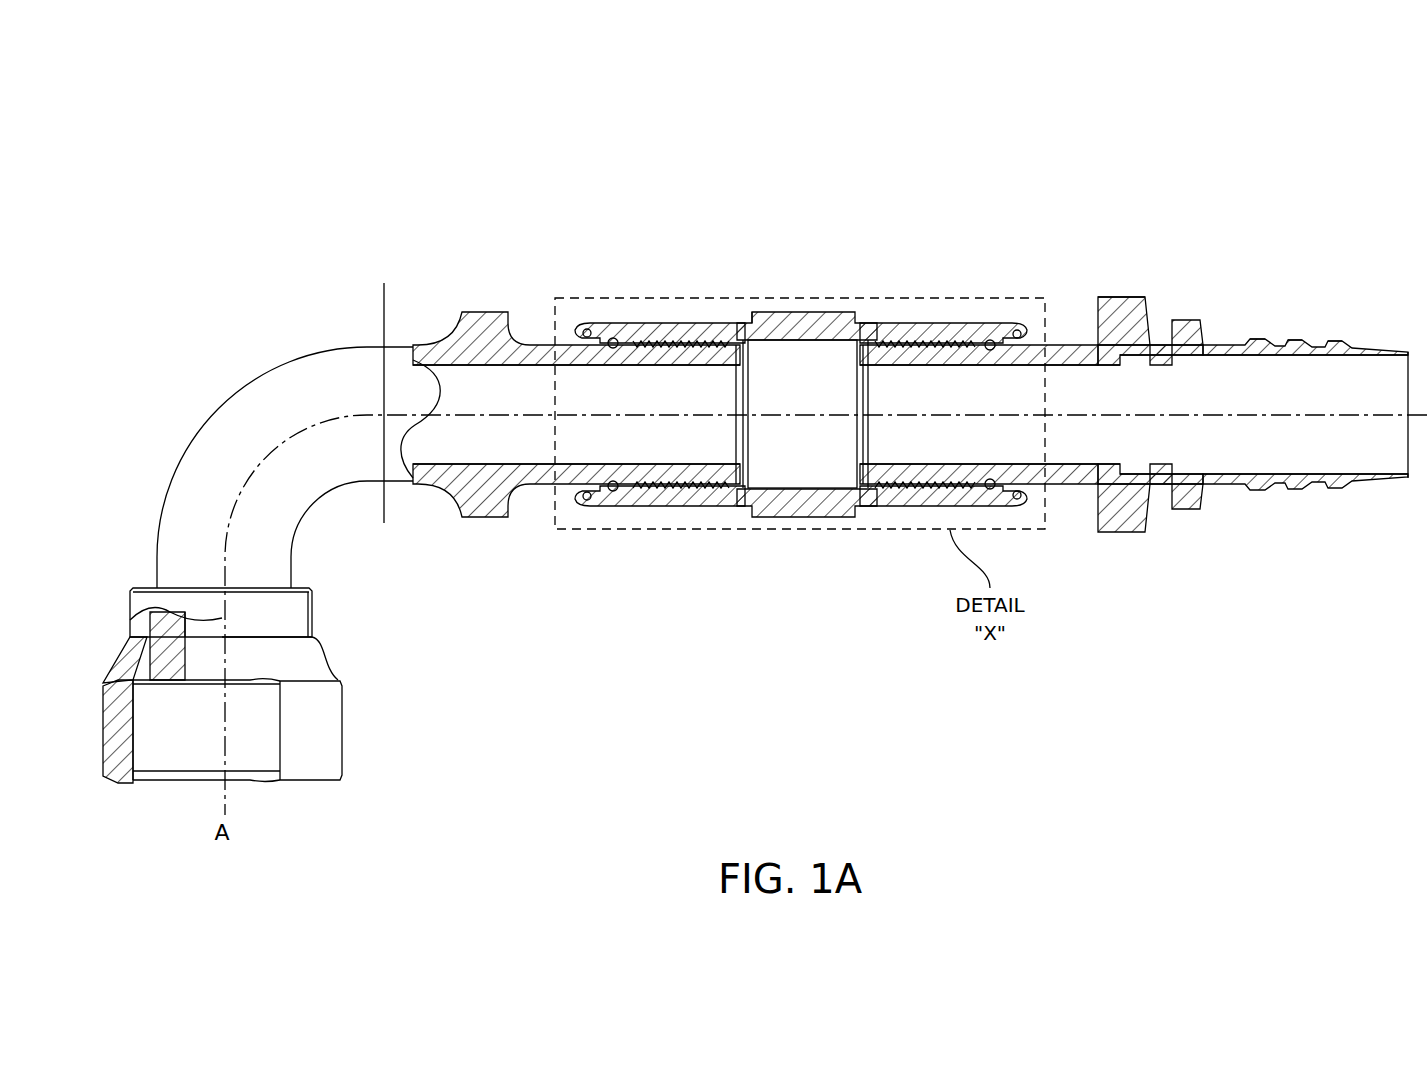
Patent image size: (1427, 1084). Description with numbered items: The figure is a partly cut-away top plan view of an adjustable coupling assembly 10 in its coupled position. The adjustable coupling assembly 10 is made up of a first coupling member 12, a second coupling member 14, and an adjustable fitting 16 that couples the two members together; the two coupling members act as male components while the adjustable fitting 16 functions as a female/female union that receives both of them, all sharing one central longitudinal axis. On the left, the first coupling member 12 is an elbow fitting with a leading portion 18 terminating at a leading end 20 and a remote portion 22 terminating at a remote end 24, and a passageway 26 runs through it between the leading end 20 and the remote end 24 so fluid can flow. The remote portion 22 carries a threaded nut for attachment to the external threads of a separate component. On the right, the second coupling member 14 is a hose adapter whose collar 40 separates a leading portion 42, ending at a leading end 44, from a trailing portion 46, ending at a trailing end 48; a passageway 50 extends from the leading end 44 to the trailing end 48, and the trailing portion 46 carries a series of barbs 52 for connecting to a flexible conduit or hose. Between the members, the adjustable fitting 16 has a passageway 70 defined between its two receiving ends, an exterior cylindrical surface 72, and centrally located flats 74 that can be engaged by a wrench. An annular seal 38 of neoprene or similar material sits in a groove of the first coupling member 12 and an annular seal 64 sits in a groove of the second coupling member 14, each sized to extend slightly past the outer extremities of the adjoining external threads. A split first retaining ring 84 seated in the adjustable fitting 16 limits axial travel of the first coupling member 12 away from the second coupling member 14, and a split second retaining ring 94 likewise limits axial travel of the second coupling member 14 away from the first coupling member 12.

The adjustable coupling assembly 10 is at (1105, 150).
The first coupling member 12 is at (313, 266).
The second coupling member 14 is at (1243, 266).
The adjustable fitting 16 is at (698, 518).
The leading portion 18 is at (543, 328).
The leading end 20 is at (745, 336).
The remote portion 22 is at (360, 645).
The remote end 24 is at (302, 783).
The passageway 26 is at (480, 404).
The annular seal 38 is at (611, 338).
The collar 40 is at (1115, 533).
The leading portion 42 is at (1057, 320).
The leading end 44 is at (870, 490).
The trailing portion 46 is at (1309, 312).
The trailing end 48 is at (1412, 352).
The passageway 50 is at (1070, 404).
The barbs 52 is at (1290, 485).
The annular seal 64 is at (989, 340).
The passageway 70 is at (787, 459).
The exterior cylindrical surface 72 is at (655, 505).
The flats 74 is at (800, 520).
The first retaining ring 84 is at (585, 500).
The second retaining ring 94 is at (1030, 520).